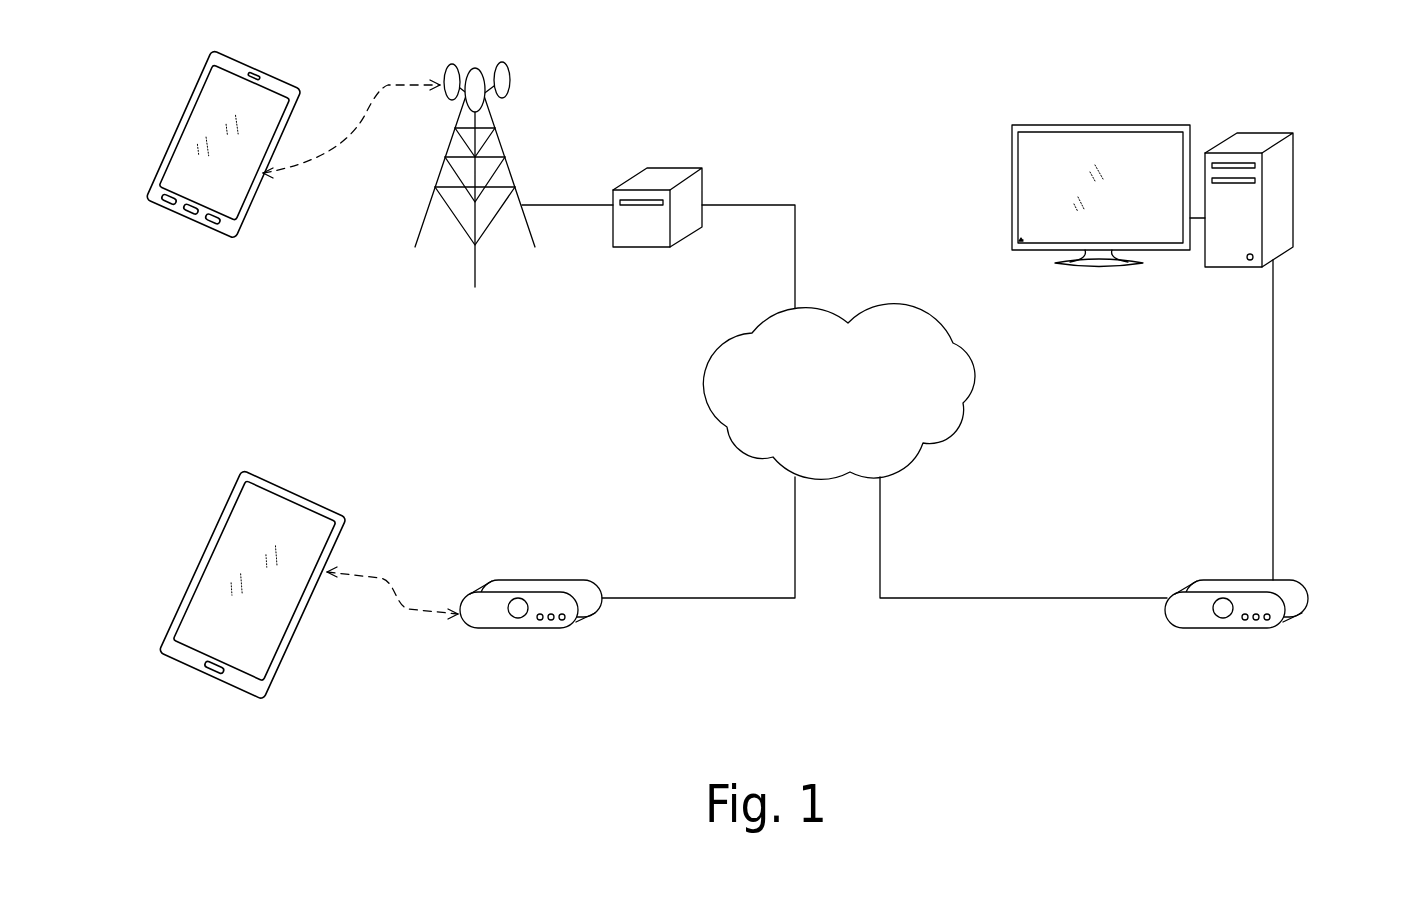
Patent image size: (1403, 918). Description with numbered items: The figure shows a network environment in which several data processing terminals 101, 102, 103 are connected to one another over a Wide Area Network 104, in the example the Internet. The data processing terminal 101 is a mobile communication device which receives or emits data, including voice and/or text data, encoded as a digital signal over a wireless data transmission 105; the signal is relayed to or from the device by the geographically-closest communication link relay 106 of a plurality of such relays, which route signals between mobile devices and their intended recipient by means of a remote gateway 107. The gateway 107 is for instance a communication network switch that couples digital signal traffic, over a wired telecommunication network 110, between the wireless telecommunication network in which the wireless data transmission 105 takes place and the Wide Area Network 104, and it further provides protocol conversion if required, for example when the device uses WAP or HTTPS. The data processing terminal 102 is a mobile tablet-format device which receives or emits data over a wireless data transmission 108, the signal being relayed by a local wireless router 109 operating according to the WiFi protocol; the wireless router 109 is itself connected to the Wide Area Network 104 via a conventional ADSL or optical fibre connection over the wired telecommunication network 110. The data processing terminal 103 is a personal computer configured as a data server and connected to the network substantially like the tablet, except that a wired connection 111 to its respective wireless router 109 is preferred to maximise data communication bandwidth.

The data processing terminal 101 is at (253, 63).
The data processing terminal 102 is at (290, 487).
The data processing terminal 103 is at (1292, 185).
The Wide Area Network 104 is at (937, 443).
The wireless data transmission 105 is at (388, 85).
The communication link relay 106 is at (500, 140).
The gateway 107 is at (677, 168).
The wireless data transmission 108 is at (390, 587).
The wireless router 109 is at (542, 582).
The wired telecommunication network 110 is at (795, 255).
The wired connection 111 is at (1273, 413).